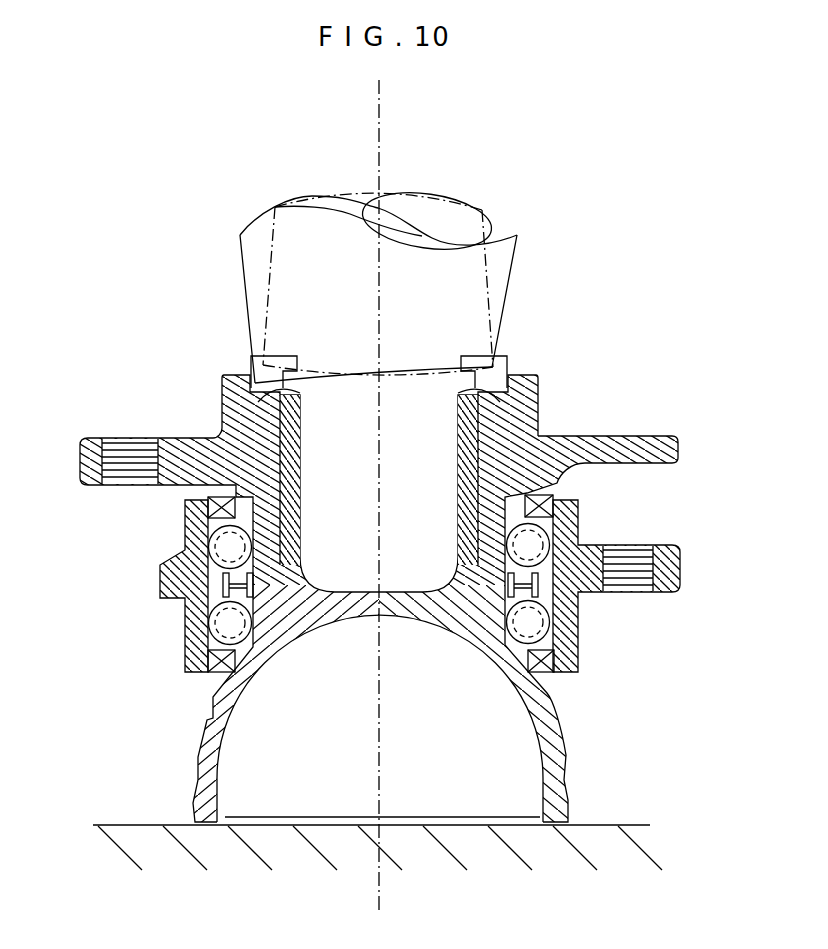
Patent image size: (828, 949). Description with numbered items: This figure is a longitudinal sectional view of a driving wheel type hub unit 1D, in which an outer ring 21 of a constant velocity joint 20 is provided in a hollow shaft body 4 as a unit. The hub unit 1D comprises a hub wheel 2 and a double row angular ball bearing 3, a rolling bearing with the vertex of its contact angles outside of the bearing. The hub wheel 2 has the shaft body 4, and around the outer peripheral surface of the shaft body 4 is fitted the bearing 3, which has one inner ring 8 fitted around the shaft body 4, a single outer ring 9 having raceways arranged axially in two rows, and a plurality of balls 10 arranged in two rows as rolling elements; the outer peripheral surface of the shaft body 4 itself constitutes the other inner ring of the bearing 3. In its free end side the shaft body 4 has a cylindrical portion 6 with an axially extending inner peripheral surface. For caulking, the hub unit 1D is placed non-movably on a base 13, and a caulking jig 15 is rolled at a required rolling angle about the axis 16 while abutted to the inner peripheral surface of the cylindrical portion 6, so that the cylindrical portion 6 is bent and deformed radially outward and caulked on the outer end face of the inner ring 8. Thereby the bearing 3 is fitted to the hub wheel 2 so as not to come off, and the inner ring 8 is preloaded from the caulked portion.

The hub unit 1D is at (414, 442).
The hub wheel 2 is at (414, 442).
The double row angular ball bearing 3 is at (598, 631).
The shaft body 4 is at (300, 536).
The cylindrical portion 6 is at (493, 370).
The inner ring 8 is at (525, 438).
The outer ring 9 is at (178, 557).
The balls 10 is at (549, 612).
The base 13 is at (637, 824).
The caulking jig 15 is at (451, 196).
The axis 16 is at (381, 150).
The constant velocity joint 20 is at (586, 770).
The outer ring of constant velocity joint 21 is at (553, 740).